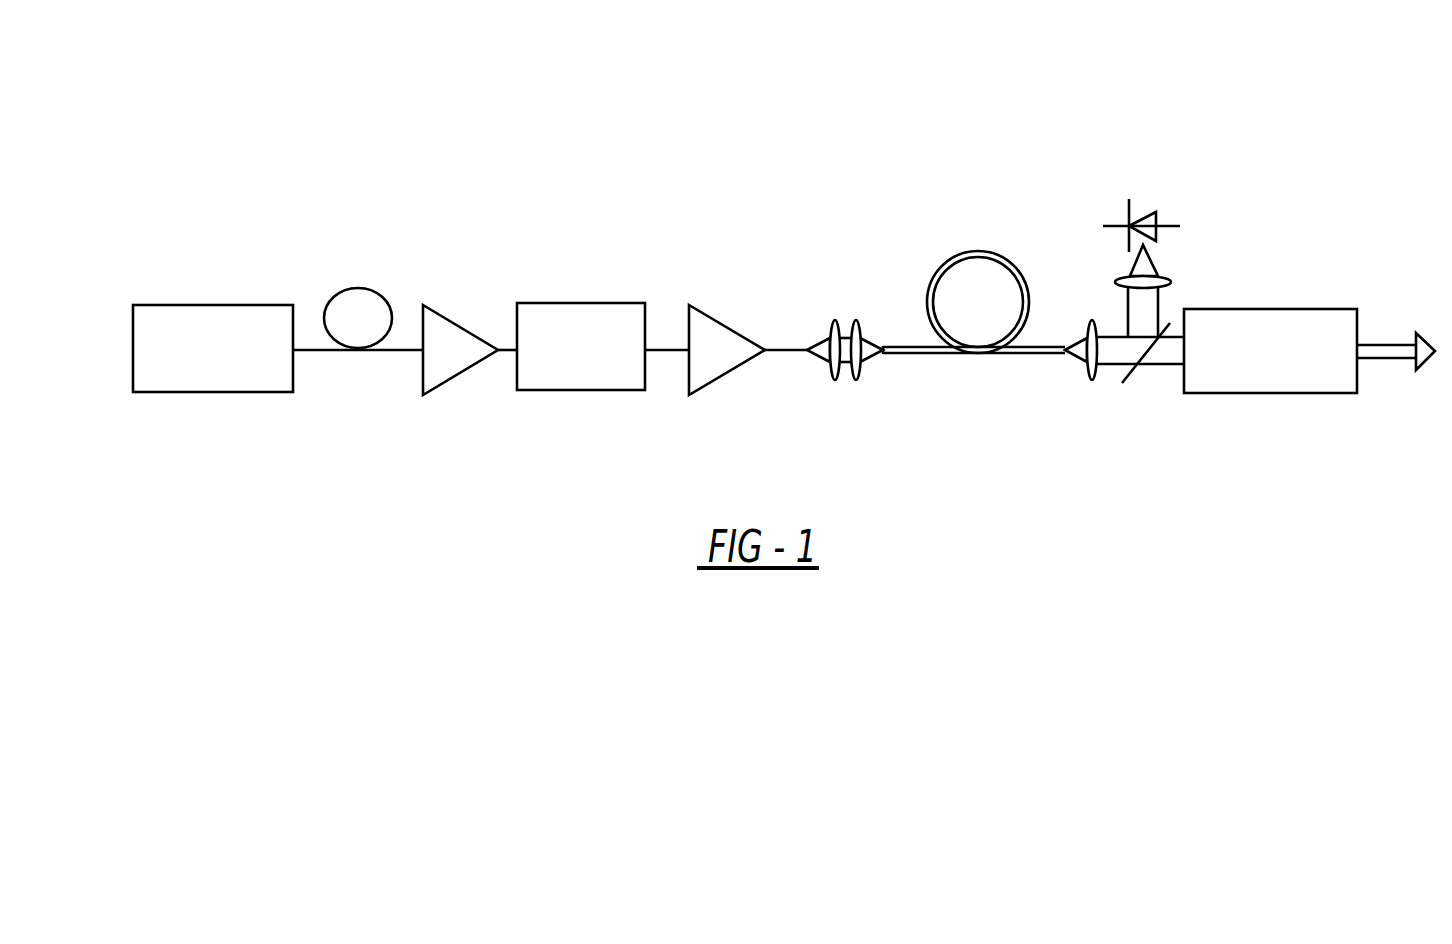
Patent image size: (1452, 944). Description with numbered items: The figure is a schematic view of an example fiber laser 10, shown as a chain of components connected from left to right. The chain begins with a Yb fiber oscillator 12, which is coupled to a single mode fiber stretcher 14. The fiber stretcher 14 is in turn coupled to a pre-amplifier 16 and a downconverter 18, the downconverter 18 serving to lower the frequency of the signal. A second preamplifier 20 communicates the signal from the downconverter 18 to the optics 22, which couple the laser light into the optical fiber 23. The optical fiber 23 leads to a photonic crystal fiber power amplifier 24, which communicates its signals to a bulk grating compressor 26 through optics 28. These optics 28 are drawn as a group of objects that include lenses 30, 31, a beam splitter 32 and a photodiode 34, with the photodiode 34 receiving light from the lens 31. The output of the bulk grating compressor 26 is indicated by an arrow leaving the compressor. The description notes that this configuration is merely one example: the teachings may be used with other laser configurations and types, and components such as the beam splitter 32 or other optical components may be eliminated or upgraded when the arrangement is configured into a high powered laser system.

The fiber laser 10 is at (1058, 97).
The Yb fiber oscillator 12 is at (232, 305).
The single mode fiber stretcher 14 is at (351, 288).
The pre-amplifier 16 is at (422, 378).
The downconverter 18 is at (540, 392).
The second preamplifier 20 is at (712, 322).
The optics 22 is at (836, 382).
The optical fiber 23 is at (903, 338).
The photonic crystal fiber power amplifier 24 is at (970, 355).
The bulk grating compressor 26 is at (1268, 393).
The optics 28 is at (1096, 401).
The lens 30 is at (1092, 330).
The lens 31 is at (1172, 283).
The beam splitter 32 is at (1132, 375).
The photodiode 34 is at (1142, 212).